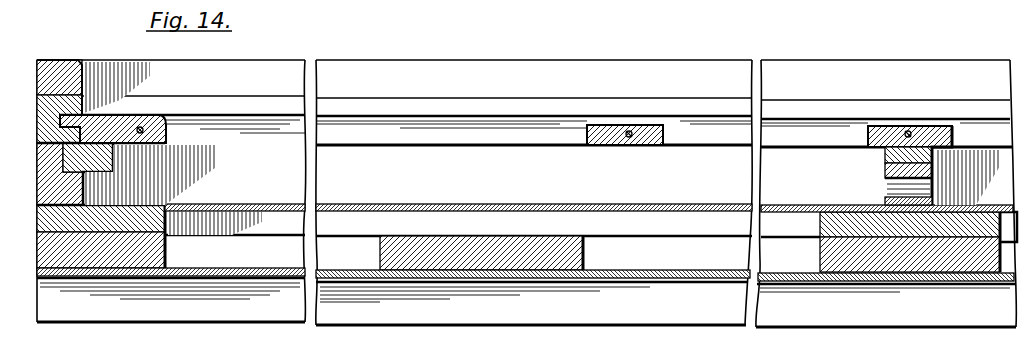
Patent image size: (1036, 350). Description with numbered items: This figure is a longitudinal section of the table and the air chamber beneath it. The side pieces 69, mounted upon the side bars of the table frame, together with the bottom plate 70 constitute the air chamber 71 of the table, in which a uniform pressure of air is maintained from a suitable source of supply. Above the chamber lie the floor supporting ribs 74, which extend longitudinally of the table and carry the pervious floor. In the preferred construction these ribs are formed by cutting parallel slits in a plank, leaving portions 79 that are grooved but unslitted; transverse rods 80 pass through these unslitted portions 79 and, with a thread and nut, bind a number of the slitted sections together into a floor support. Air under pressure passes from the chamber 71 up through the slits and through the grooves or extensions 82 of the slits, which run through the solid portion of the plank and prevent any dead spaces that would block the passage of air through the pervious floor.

The side pieces 69 is at (44, 182).
The bottom plate 70 is at (365, 206).
The air chamber 71 is at (664, 159).
The floor supporting ribs 74 is at (535, 119).
The grooved but unslitted portions 79 is at (160, 147).
The transverse rods 80 is at (953, 167).
The grooves or extensions of the slits 82 is at (108, 120).